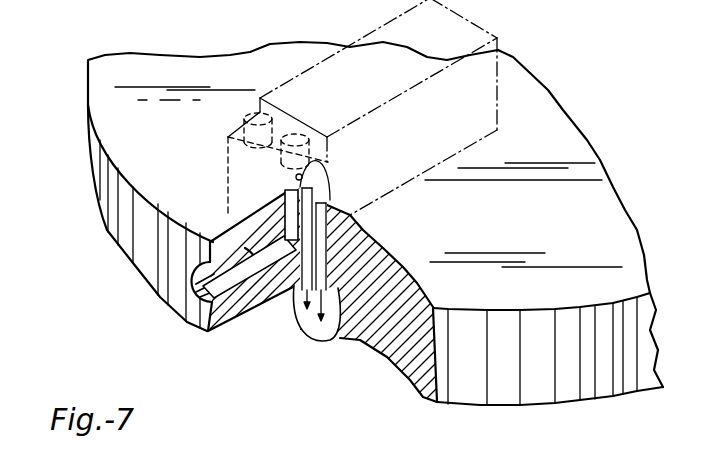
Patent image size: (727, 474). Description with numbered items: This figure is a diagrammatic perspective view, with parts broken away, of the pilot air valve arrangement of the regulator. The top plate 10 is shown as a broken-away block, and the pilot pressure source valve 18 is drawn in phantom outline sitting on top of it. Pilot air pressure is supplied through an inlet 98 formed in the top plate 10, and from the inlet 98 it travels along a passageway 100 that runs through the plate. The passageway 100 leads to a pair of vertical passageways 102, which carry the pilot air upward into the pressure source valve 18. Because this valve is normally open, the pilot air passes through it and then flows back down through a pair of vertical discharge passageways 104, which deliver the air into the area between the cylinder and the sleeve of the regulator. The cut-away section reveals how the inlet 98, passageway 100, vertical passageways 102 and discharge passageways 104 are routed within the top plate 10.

The top plate 10 is at (577, 152).
The pilot pressure source valve 18 is at (492, 94).
The inlet 98 is at (207, 283).
The passageway 100 is at (268, 258).
The vertical passageways 102 is at (292, 185).
The vertical discharge passageways 104 is at (336, 341).